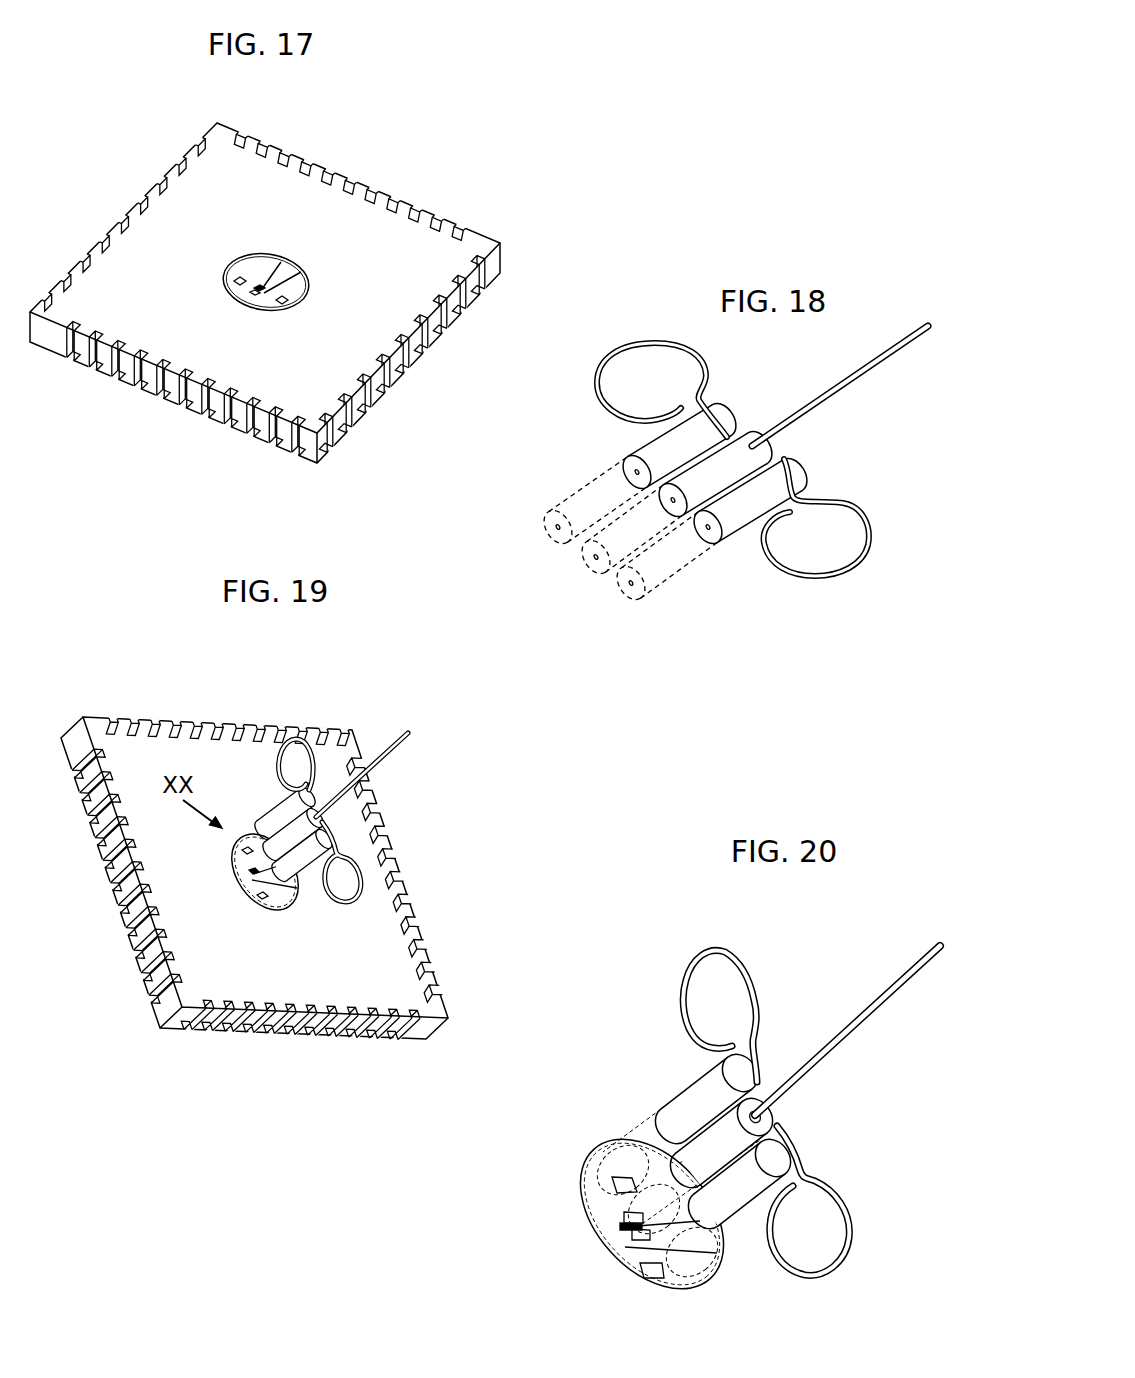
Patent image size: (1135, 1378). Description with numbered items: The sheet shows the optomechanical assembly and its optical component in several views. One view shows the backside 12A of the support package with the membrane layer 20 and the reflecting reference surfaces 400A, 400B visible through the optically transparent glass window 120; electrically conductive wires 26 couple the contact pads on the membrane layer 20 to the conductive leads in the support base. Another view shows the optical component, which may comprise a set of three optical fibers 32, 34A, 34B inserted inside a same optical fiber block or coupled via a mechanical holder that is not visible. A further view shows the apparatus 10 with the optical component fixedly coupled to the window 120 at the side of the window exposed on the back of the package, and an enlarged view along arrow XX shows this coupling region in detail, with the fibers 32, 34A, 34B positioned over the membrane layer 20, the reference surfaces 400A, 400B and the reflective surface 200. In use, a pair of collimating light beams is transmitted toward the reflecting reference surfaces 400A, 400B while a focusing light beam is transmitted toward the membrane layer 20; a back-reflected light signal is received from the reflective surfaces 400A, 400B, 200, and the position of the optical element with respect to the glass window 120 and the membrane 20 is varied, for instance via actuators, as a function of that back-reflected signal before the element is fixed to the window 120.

In FIG. 17, the circuit board assembly 10 is at (388, 152).
In FIG. 19, the circuit board assembly 10 is at (437, 832).
In FIG. 17, the backside of the support 12A is at (487, 240).
In FIG. 17, the optically transparent glass window 120 is at (250, 258).
In FIG. 20, the optically transparent glass window 120 is at (612, 1248).
In FIG. 17, the membrane layer 20 is at (253, 297).
In FIG. 17, the electrically conductive wires 26 is at (262, 260).
In FIG. 20, the electrically conductive wires 26 is at (698, 1282).
In FIG. 17, the reference surface 400A is at (235, 278).
In FIG. 20, the reference surface 400A is at (613, 1180).
In FIG. 17, the reference surface 400B is at (297, 300).
In FIG. 20, the reference surface 400B is at (645, 1280).
In FIG. 20, the reflective surface 200 is at (627, 1220).
In FIG. 18, the optical fiber 32 is at (582, 575).
In FIG. 20, the optical fiber 32 is at (778, 1112).
In FIG. 18, the optical fiber 34A is at (610, 453).
In FIG. 20, the optical fiber 34A is at (666, 1104).
In FIG. 18, the optical fiber 34B is at (737, 545).
In FIG. 20, the optical fiber 34B is at (738, 1226).